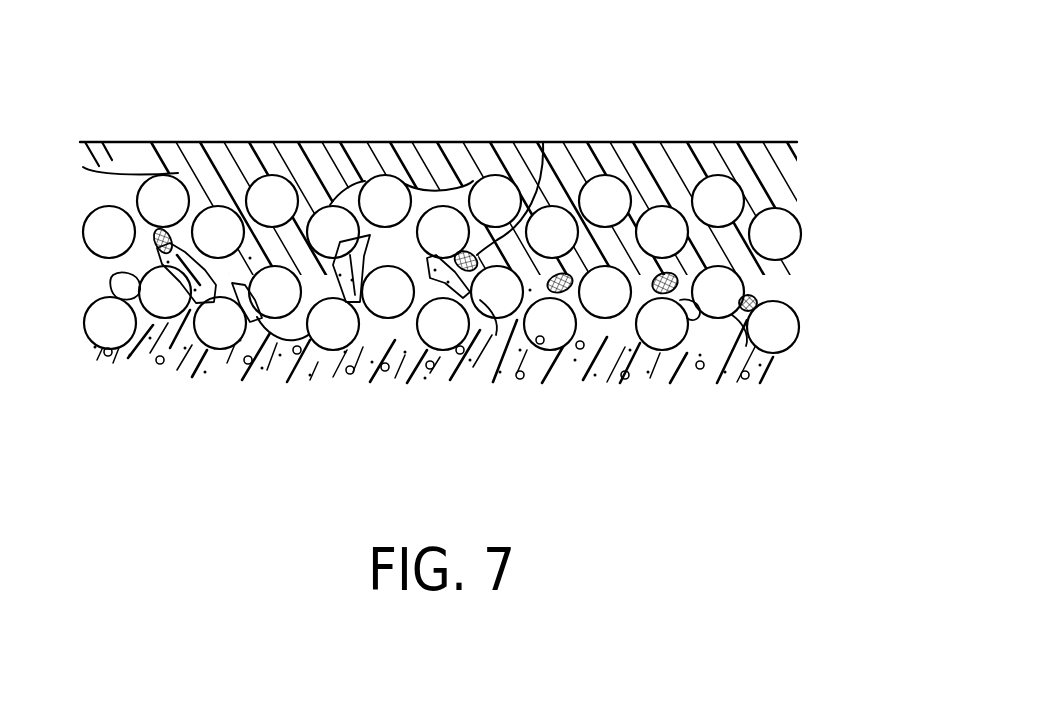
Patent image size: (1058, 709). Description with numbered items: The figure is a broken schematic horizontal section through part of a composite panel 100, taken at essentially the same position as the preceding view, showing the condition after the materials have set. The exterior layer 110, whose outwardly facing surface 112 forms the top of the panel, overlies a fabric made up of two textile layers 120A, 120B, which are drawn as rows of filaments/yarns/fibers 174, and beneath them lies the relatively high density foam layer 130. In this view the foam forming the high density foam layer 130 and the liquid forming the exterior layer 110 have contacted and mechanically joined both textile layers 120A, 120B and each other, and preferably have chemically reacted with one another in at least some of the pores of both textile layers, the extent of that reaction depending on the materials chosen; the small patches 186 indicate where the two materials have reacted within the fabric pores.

The composite panel 100 is at (332, 98).
The exterior layer 110 is at (121, 152).
The outwardly facing surface 112 is at (187, 142).
The first textile layer 120A is at (803, 267).
The second textile layer 120B is at (805, 153).
The relatively high density foam layer 130 is at (672, 376).
The filaments/yarns/fibers of fabric 174 is at (115, 330).
The binder particles 186 is at (543, 143).